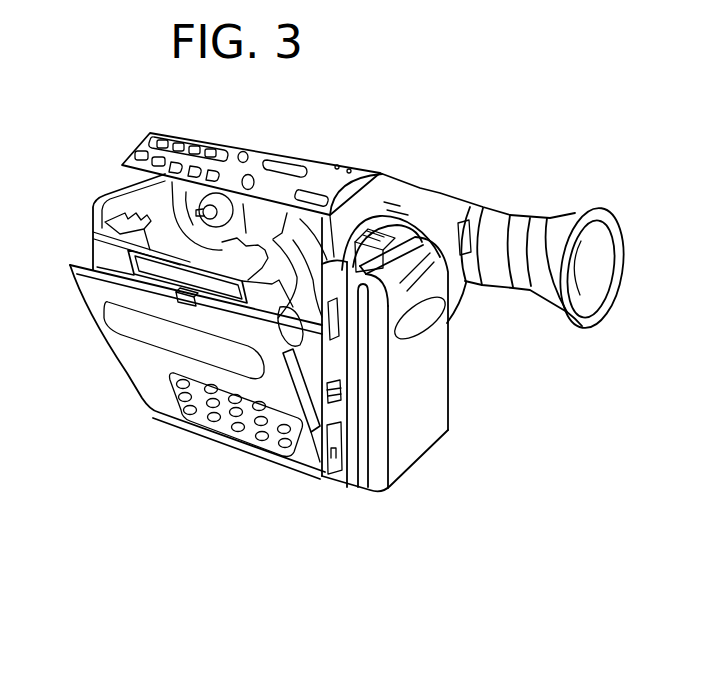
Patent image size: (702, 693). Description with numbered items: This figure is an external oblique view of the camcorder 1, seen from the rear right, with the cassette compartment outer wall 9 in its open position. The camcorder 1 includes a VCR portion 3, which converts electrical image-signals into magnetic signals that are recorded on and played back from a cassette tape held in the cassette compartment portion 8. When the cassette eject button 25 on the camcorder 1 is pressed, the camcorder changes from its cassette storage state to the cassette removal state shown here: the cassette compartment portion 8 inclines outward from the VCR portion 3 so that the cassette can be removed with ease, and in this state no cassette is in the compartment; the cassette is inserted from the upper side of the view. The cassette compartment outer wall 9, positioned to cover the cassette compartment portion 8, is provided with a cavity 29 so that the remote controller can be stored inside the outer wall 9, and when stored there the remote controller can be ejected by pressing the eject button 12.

The camcorder 1 is at (342, 162).
The VCR portion 3 is at (327, 475).
The cassette compartment portion 8 is at (103, 190).
The cassette compartment outer wall 9 is at (163, 398).
The eject button 12 is at (177, 295).
The cassette eject button 25 is at (297, 190).
The cavity 29 is at (310, 413).